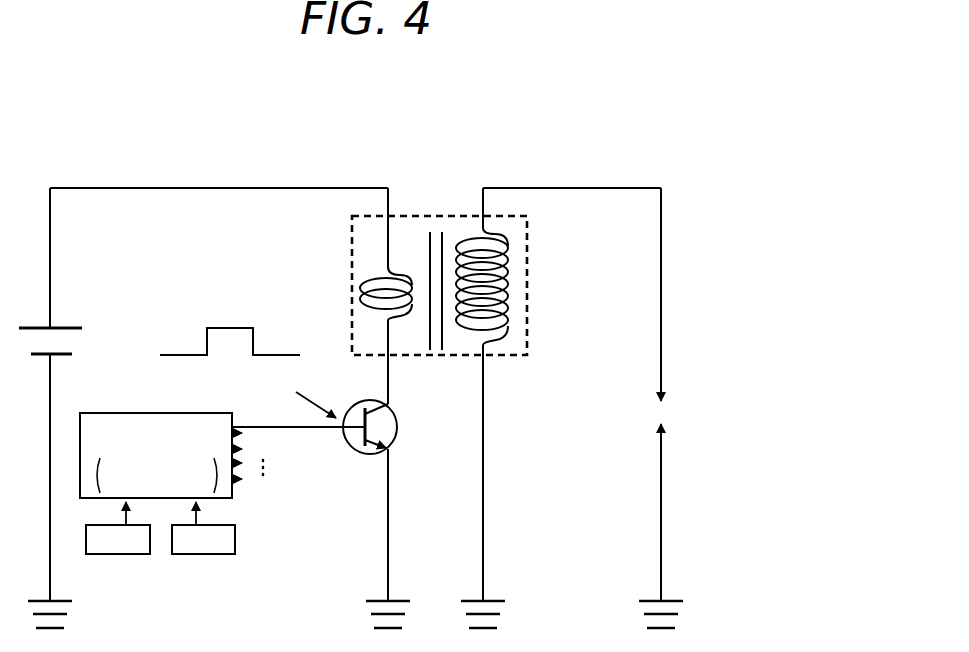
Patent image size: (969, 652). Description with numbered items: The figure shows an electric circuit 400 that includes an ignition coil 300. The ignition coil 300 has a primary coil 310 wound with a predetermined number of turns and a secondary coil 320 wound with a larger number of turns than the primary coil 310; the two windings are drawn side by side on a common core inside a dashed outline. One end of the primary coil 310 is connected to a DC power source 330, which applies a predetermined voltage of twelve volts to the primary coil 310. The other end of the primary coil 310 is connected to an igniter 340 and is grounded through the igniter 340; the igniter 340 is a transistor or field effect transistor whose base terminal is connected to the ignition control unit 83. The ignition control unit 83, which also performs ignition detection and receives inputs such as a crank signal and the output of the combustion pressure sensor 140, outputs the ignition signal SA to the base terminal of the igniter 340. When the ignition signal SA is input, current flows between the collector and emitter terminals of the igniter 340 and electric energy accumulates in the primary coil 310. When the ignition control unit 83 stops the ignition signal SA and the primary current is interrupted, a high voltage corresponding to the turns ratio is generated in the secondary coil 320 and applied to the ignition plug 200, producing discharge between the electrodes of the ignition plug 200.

The electric circuit 400 is at (483, 165).
The ignition coil 300 is at (428, 216).
The primary coil 310 is at (363, 268).
The secondary coil 320 is at (510, 248).
The DC power source 330 is at (58, 327).
The igniter 340 is at (347, 453).
The ignition control unit 83 is at (88, 412).
The combustion pressure sensor 140 is at (203, 528).
The ignition plug 200 is at (731, 394).